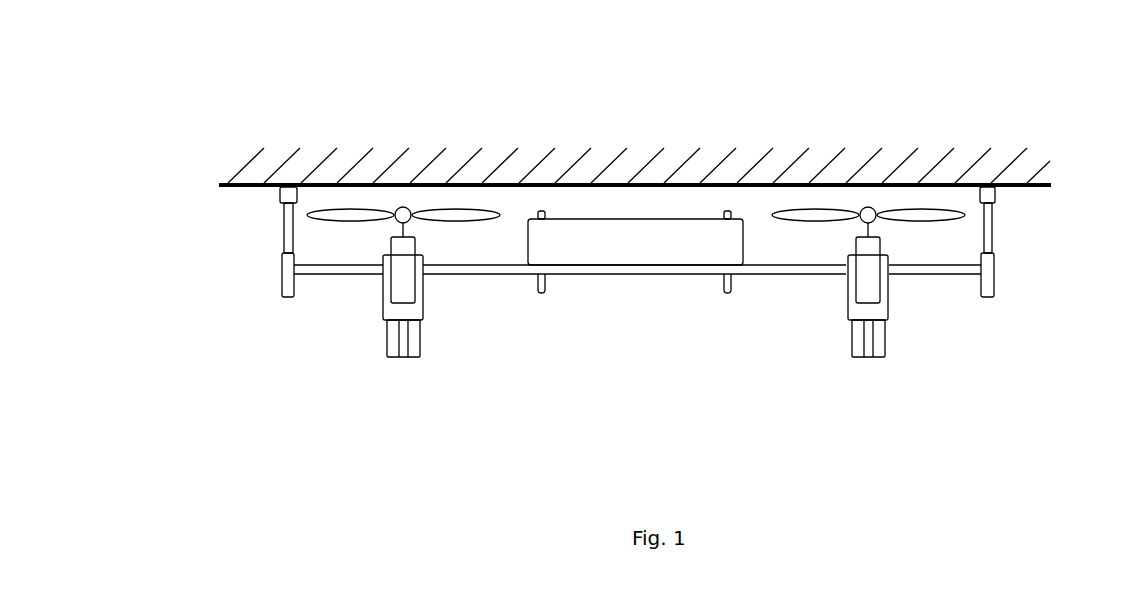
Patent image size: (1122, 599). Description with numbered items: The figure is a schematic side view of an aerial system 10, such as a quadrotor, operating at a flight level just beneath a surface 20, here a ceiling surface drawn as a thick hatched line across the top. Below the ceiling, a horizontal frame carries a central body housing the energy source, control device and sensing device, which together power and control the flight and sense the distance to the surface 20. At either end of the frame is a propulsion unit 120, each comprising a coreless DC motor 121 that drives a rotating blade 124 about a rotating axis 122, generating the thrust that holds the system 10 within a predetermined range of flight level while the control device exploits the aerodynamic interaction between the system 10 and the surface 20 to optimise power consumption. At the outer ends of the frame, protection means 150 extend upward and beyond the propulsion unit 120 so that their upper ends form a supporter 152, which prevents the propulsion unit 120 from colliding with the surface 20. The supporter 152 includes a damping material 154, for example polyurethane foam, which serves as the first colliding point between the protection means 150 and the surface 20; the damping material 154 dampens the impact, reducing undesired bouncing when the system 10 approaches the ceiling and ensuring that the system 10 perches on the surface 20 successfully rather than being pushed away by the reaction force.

The aerial system 10 is at (1018, 230).
The surface 20 is at (943, 174).
The propulsion unit 120 is at (915, 316).
The coreless DC motor 121 is at (872, 275).
The rotating axis 122 is at (922, 217).
The rotating blade 124 is at (985, 273).
The protection means 150 is at (241, 286).
The supporter 152 is at (283, 255).
The damping material 154 is at (285, 201).